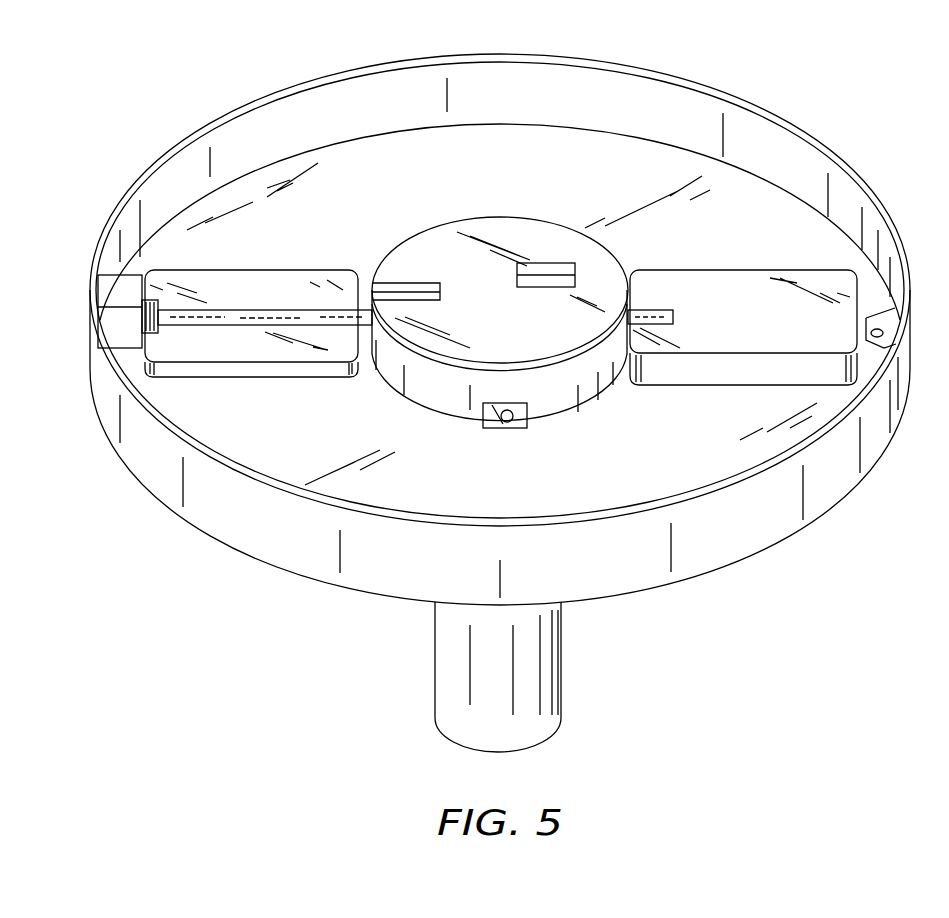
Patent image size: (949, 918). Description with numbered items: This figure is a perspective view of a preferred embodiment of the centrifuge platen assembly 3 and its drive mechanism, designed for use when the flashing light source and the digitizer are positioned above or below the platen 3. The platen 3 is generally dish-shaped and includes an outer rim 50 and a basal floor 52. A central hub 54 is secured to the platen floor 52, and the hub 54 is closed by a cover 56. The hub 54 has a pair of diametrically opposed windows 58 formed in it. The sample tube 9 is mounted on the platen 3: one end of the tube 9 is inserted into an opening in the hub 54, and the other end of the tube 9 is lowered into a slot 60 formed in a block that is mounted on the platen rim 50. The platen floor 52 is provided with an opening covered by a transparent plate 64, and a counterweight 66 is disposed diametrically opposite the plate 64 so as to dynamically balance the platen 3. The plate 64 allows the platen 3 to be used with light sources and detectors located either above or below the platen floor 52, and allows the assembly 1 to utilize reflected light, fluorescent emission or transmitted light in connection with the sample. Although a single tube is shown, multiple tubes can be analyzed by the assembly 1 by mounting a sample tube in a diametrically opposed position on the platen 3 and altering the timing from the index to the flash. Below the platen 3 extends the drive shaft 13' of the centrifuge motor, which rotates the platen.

The assembly 1 is at (797, 101).
The centrifuge platen assembly 3 is at (746, 520).
The sample tube 9 is at (243, 315).
The drive shaft 13' is at (529, 677).
The outer rim 50 is at (500, 56).
The basal floor 52 is at (633, 343).
The central hub 54 is at (398, 373).
The cover 56 is at (483, 318).
The windows 58 is at (520, 421).
The slot 60 is at (120, 326).
The transparent plate 64 is at (246, 372).
The counterweight 66 is at (810, 377).